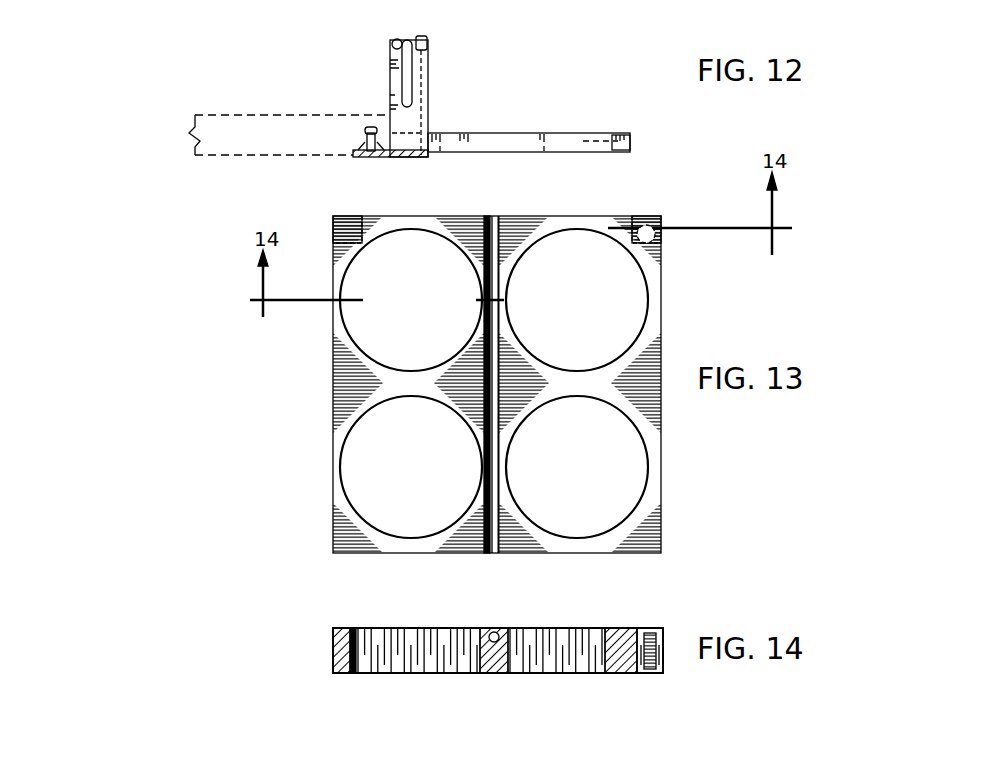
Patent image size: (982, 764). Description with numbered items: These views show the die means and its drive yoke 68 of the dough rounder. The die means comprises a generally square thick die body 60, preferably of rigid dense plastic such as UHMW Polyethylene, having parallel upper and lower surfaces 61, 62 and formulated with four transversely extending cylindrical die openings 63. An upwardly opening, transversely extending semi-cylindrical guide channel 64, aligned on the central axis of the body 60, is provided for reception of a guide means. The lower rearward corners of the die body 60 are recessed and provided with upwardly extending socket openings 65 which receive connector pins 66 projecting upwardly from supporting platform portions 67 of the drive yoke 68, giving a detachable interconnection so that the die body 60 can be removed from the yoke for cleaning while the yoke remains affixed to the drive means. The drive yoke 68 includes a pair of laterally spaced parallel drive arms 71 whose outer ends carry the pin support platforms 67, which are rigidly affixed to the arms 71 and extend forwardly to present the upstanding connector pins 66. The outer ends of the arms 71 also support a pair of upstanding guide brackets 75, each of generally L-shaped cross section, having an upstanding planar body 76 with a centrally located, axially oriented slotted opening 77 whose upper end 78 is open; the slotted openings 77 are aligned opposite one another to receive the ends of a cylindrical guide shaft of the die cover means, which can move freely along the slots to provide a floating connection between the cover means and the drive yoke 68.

In FIG. 13, the die body 60 is at (355, 382).
In FIG. 14, the die body 60 is at (333, 645).
In FIG. 14, the upper surface 61 is at (629, 630).
In FIG. 14, the lower surface 62 is at (492, 674).
In FIG. 13, the cylindrical die openings 63 is at (357, 352).
In FIG. 14, the cylindrical die openings 63 is at (356, 630).
In FIG. 13, the guide channel 64 is at (495, 216).
In FIG. 14, the guide channel 64 is at (494, 630).
In FIG. 13, the socket openings 65 is at (332, 230).
In FIG. 14, the socket openings 65 is at (642, 674).
In FIG. 12, the connector pins 66 is at (368, 128).
In FIG. 12, the supporting platform portions 67 is at (368, 158).
In FIG. 12, the drive yoke 68 is at (502, 100).
In FIG. 12, the drive arms 71 is at (524, 133).
In FIG. 12, the guide brackets 75 is at (436, 88).
In FIG. 12, the planar body 76 is at (390, 56).
In FIG. 12, the slotted opening 77 is at (428, 45).
In FIG. 12, the open upper end 78 is at (406, 40).